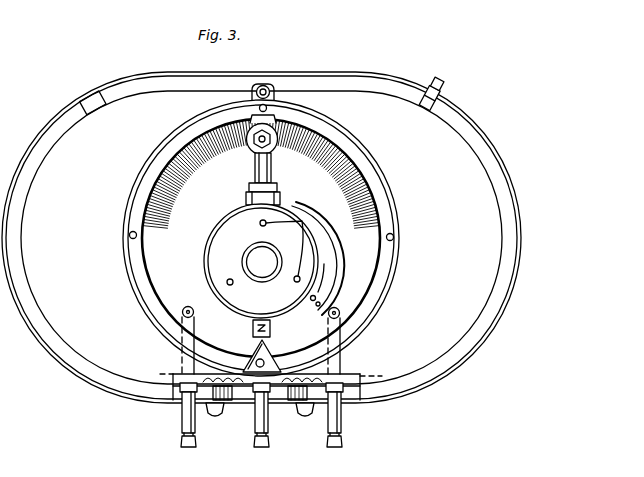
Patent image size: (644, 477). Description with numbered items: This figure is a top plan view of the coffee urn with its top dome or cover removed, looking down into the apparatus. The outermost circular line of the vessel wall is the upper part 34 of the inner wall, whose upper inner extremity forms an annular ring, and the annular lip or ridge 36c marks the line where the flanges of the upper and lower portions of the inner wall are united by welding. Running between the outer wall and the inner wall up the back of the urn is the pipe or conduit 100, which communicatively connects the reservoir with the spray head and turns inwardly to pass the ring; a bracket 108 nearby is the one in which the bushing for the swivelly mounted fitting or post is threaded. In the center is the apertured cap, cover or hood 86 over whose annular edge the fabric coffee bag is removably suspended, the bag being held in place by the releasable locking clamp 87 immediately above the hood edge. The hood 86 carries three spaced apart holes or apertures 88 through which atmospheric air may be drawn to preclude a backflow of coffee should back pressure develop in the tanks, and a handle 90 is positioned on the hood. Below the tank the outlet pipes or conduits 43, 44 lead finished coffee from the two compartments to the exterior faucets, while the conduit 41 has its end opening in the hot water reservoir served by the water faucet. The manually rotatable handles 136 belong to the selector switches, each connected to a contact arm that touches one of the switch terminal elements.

The upper part of the inner wall 34 is at (476, 207).
The annular lip or ridge 36c is at (522, 242).
The pipe or conduit 100 is at (275, 74).
The bracket 108 is at (278, 107).
The apertured cap or cover or hood 86 is at (218, 270).
The releasable locking clamp 87 is at (326, 262).
The holes or apertures 88 is at (302, 221).
The handle 90 is at (253, 332).
The outlet pipe or conduit 43 is at (183, 420).
The conduit 41 is at (254, 428).
The outlet pipe or conduit 44 is at (345, 417).
The manually rotatable handle 136 is at (214, 414).